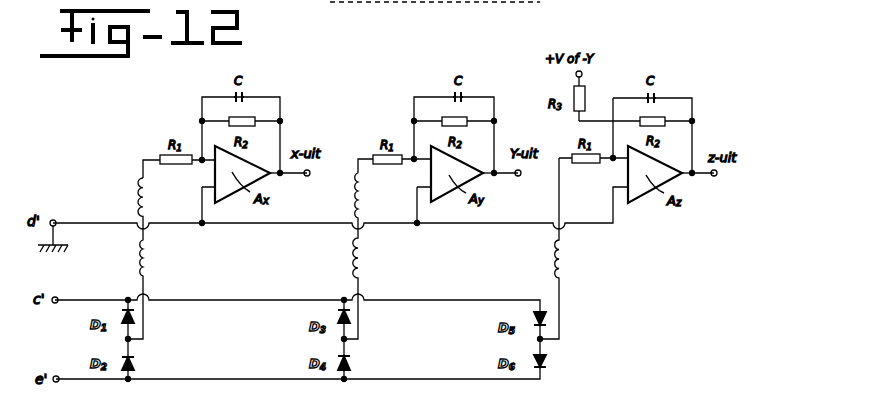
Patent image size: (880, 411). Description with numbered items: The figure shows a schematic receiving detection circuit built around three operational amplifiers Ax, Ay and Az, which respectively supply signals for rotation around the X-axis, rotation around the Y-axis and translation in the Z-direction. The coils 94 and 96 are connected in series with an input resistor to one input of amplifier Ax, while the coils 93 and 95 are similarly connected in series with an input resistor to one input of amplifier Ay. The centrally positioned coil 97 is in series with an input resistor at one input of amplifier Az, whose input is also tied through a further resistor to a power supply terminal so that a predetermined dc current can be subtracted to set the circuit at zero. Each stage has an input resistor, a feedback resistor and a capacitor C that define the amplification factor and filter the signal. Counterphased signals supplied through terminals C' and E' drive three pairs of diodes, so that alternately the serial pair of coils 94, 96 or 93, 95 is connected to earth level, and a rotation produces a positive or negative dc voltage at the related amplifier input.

The coil 93 is at (353, 190).
The coil 94 is at (138, 260).
The coil 95 is at (353, 260).
The coil 96 is at (137, 194).
The coil 97 is at (550, 263).